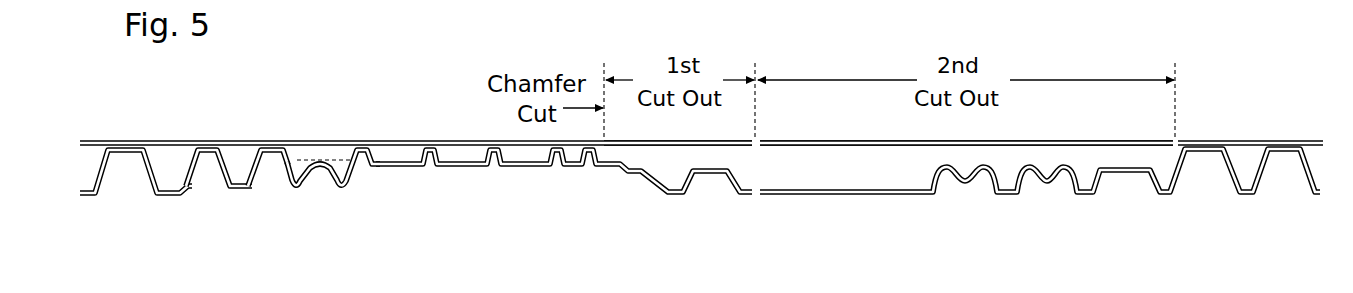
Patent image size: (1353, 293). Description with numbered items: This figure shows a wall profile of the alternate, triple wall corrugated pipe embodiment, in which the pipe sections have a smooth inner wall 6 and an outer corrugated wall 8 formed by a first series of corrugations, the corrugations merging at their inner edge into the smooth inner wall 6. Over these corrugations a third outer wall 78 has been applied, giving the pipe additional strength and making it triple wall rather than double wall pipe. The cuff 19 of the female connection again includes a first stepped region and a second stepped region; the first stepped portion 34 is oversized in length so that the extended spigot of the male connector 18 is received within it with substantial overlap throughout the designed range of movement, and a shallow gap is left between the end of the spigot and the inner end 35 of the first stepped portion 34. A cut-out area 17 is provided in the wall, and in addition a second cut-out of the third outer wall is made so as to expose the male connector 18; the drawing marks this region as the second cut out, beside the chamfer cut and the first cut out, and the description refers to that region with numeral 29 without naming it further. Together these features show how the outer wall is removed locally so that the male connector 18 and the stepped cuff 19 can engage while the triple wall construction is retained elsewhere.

The smooth inner wall 6 is at (127, 198).
The outer corrugated wall 8 is at (137, 140).
The cut-out area 17 is at (707, 130).
The male connector 18 is at (977, 208).
The cuff 19 is at (472, 172).
The second cut out region of skin 29 is at (1007, 133).
The first stepped portion 34 is at (260, 192).
The inner end 35 is at (197, 193).
The third outer wall 78 is at (392, 139).